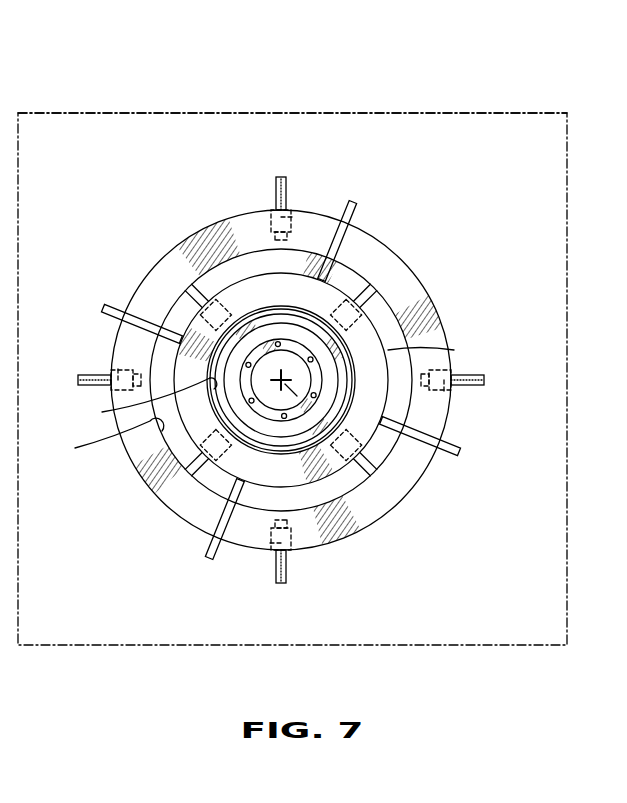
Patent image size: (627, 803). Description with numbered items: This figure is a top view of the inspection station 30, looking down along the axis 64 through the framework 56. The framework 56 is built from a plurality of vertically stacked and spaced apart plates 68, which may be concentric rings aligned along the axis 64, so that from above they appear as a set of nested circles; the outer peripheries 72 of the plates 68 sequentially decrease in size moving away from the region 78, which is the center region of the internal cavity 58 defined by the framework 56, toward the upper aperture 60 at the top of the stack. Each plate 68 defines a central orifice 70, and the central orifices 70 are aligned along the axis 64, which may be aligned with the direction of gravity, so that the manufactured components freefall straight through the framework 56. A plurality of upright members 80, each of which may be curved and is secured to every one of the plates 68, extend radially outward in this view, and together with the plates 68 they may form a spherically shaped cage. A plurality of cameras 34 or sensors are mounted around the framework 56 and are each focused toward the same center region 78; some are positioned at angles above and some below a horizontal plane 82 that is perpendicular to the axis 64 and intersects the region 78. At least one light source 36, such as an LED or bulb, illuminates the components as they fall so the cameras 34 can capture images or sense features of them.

The inspection station 30 is at (510, 90).
The cameras 34 is at (307, 214).
The light source 36 is at (412, 479).
The framework 56 is at (456, 331).
The internal cavity 58 is at (274, 256).
The upper aperture 60 is at (284, 363).
The axis 64 is at (331, 478).
The plates 68 is at (262, 482).
The central orifice 70 is at (132, 418).
The outer peripheries 72 is at (455, 350).
The region 78 is at (198, 523).
The upright members 80 is at (360, 208).
The horizontal plane 82 is at (300, 111).